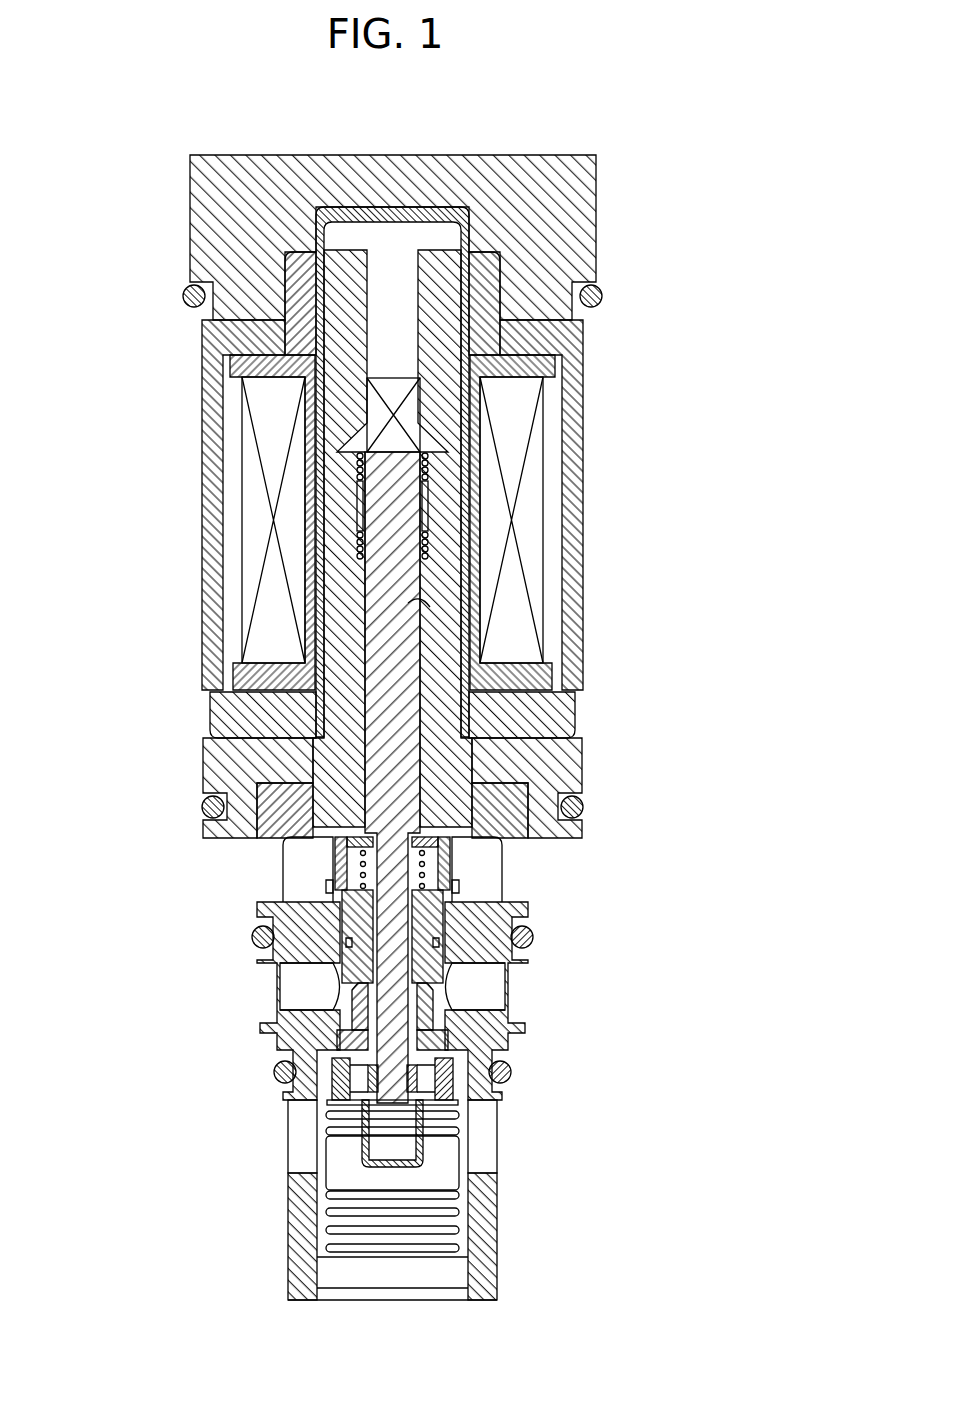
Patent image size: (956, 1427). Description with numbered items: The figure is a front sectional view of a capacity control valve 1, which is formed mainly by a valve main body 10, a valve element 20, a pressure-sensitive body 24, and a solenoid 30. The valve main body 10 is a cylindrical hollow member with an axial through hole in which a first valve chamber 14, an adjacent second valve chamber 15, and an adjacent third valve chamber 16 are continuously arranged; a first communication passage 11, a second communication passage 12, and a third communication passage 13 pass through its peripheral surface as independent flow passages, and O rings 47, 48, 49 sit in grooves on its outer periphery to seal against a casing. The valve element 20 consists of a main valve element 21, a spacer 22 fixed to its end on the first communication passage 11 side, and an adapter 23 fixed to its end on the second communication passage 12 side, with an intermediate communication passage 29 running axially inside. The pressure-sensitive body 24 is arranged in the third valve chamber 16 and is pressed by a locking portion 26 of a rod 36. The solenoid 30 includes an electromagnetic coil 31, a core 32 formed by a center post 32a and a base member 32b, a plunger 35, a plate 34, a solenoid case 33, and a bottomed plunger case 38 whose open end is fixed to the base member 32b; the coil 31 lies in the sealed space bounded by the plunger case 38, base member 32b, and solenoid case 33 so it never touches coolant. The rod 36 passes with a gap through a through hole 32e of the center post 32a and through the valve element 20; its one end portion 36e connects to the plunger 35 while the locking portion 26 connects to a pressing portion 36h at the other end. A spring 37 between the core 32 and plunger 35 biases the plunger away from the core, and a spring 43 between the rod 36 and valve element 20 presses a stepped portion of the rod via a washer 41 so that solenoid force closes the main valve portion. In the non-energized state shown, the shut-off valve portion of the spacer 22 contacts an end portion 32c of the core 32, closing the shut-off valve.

The capacity control valve 1 is at (116, 138).
The valve main body 10 is at (140, 841).
The first communication passage 11 is at (312, 857).
The second communication passage 12 is at (304, 978).
The third communication passage 13 is at (298, 1132).
The first valve chamber 14 is at (328, 886).
The second valve chamber 15 is at (324, 1003).
The third valve chamber 16 is at (320, 1158).
The valve element 20 is at (655, 910).
The main valve element 21 is at (433, 942).
The spacer 22 is at (497, 901).
The adapter 23 is at (450, 987).
The pressure-sensitive body 24 is at (460, 1158).
The locking portion 26 is at (463, 1077).
The intermediate communication passage 29 is at (433, 1012).
The solenoid 30 is at (178, 372).
The electromagnetic coil 31 is at (262, 610).
The core 32 is at (105, 695).
The center post 32a is at (343, 723).
The base member 32b is at (233, 763).
The end portion 32c is at (584, 806).
The through hole 32e is at (408, 600).
The solenoid case 33 is at (210, 565).
The plate 34 is at (280, 330).
The plunger 35 is at (328, 400).
The rod 36 is at (388, 498).
The one end portion 36e is at (404, 414).
The pressing portion 36h is at (415, 1118).
The spring 37 is at (357, 550).
The plunger case 38 is at (316, 230).
The washer 41 is at (422, 860).
The spring 43 is at (444, 880).
The O ring 47 is at (203, 807).
The O ring 48 is at (251, 937).
The O ring 49 is at (273, 1072).